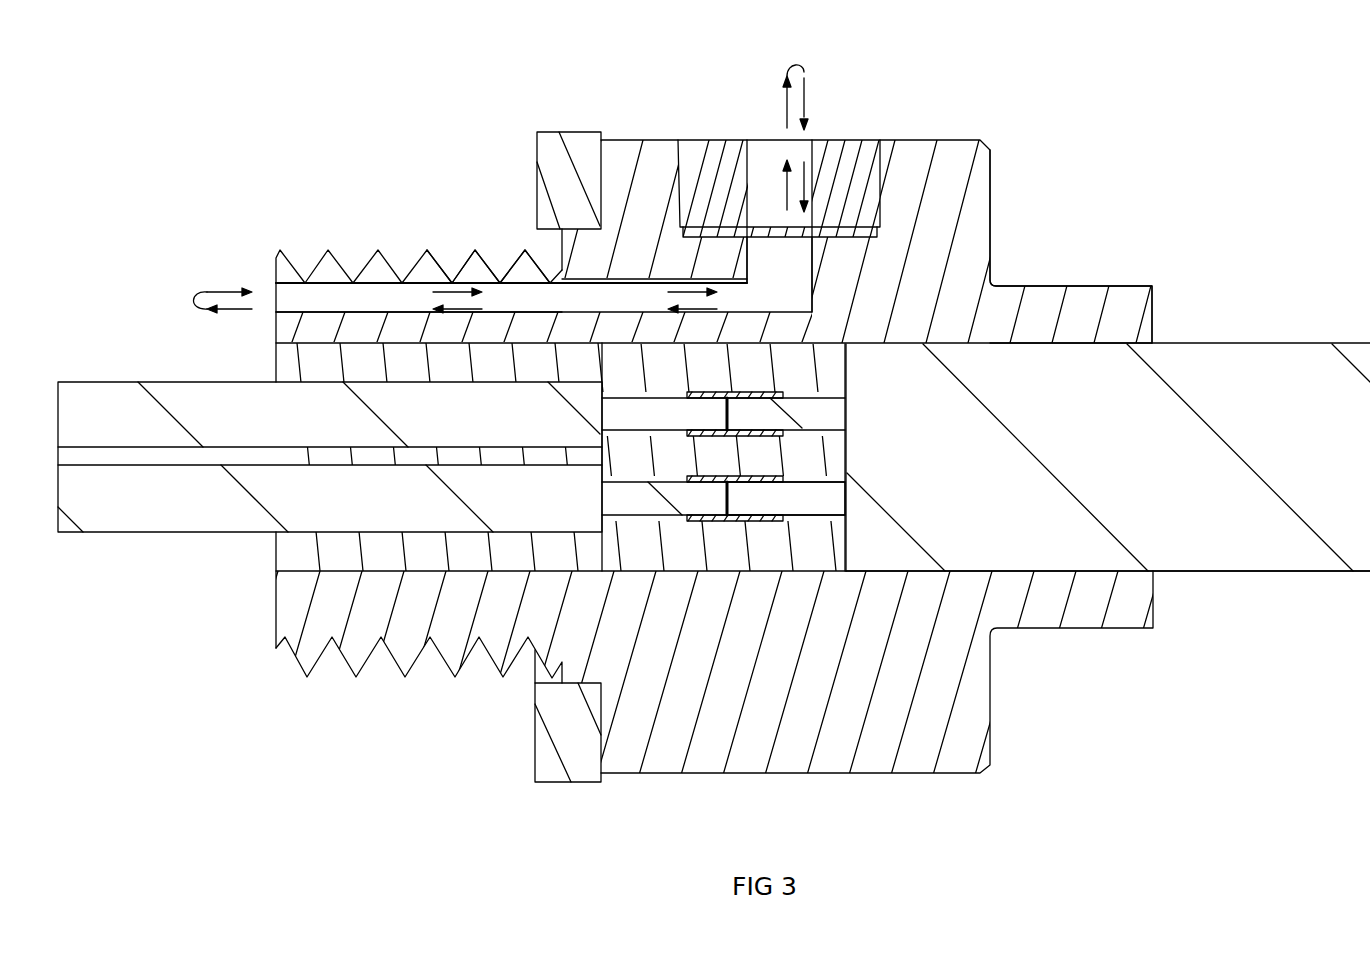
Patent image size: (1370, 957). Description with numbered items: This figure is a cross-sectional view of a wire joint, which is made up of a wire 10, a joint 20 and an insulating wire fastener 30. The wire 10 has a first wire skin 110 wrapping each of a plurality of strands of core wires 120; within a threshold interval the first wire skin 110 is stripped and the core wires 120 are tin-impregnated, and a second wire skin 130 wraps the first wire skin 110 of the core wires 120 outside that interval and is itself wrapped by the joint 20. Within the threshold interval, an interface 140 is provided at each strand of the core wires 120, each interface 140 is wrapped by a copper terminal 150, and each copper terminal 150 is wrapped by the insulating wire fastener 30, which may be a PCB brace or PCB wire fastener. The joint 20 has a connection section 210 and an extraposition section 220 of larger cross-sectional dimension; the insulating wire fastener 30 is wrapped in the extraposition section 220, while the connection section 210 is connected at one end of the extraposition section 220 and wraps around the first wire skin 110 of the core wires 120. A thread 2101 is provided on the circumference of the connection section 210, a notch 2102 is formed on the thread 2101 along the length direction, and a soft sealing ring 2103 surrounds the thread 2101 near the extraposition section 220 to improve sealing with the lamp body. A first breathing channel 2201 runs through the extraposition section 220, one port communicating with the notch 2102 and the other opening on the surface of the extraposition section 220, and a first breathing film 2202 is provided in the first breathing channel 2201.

The wire 10 is at (1258, 343).
The joint 20 is at (603, 126).
The insulating wire fastener 30 is at (630, 553).
The first wire skin 110 is at (103, 382).
The core wires 120 is at (813, 498).
The second wire skin 130 is at (1248, 553).
The interface 140 is at (727, 408).
The copper terminal 150 is at (770, 437).
The connection section 210 is at (330, 263).
The thread 2101 is at (520, 268).
The notch 2102 is at (272, 298).
The sealing ring 2103 is at (557, 140).
The extraposition section 220 is at (985, 145).
The first breathing channel 2201 is at (806, 278).
The first breathing film 2202 is at (763, 227).